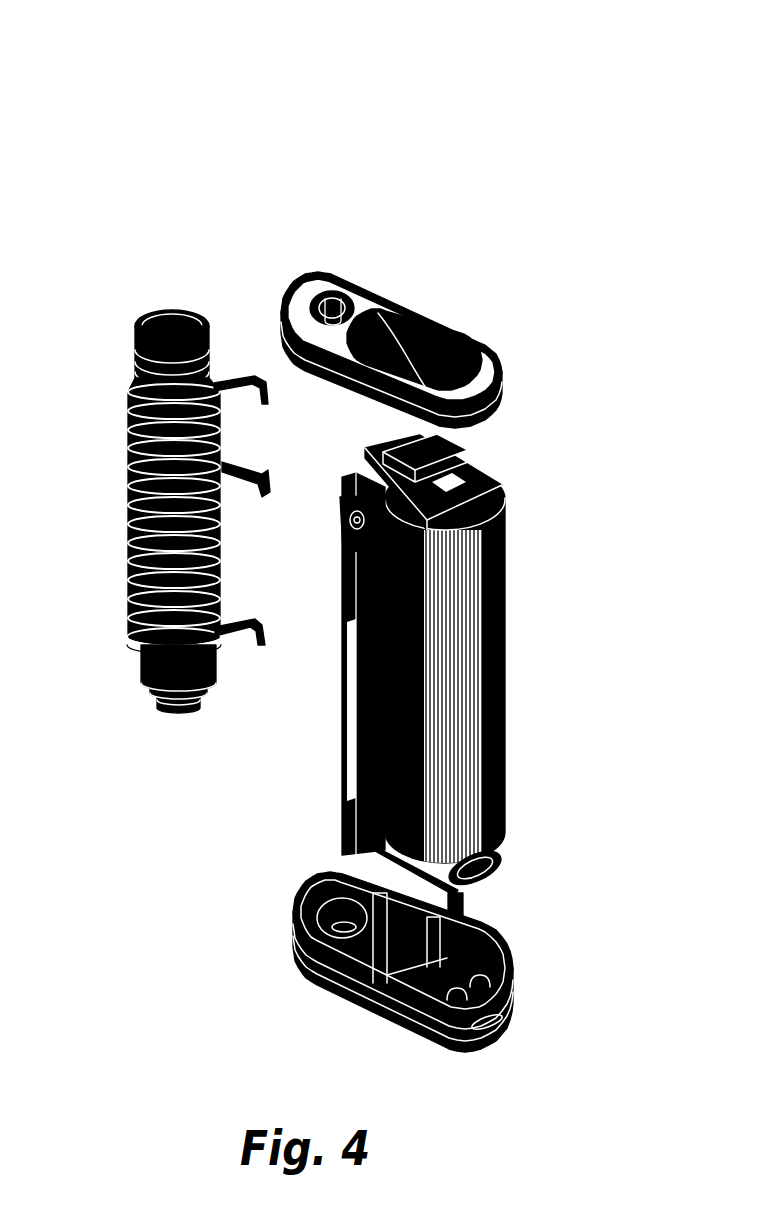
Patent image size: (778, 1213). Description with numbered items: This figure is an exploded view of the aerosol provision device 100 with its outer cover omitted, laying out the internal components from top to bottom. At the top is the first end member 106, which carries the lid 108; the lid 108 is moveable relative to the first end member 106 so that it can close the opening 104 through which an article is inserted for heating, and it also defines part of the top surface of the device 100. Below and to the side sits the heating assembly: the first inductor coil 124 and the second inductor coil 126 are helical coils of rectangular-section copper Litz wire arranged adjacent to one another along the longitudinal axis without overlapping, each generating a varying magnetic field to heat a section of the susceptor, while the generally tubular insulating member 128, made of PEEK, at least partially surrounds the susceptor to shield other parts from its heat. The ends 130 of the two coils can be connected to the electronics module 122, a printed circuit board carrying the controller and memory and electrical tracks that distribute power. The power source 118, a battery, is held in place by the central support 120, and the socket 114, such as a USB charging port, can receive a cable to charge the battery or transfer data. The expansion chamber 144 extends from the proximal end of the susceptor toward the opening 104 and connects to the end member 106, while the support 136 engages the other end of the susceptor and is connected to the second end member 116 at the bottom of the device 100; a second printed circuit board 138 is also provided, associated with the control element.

The aerosol provision device 100 is at (421, 118).
The opening 104 is at (331, 306).
The first end member 106 is at (484, 356).
The lid 108 is at (418, 331).
The socket/port 114 is at (482, 871).
The second end member 116 is at (320, 982).
The power source 118 is at (503, 722).
The central support 120 is at (370, 753).
The electronics module 122 is at (350, 684).
The first inductor coil 124 is at (129, 421).
The second inductor coil 126 is at (139, 607).
The insulating member 128 is at (141, 372).
The ends of the inductor coils 130 is at (266, 404).
The support 136 is at (160, 700).
The second printed circuit board 138 is at (350, 534).
The expansion chamber 144 is at (140, 325).